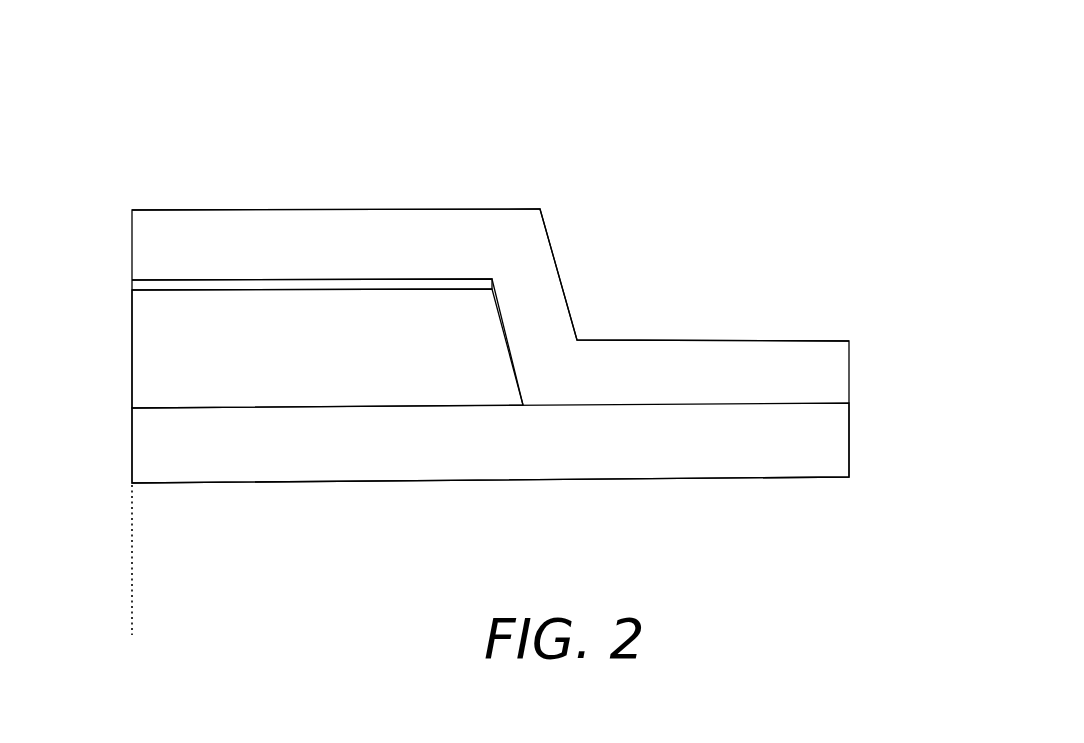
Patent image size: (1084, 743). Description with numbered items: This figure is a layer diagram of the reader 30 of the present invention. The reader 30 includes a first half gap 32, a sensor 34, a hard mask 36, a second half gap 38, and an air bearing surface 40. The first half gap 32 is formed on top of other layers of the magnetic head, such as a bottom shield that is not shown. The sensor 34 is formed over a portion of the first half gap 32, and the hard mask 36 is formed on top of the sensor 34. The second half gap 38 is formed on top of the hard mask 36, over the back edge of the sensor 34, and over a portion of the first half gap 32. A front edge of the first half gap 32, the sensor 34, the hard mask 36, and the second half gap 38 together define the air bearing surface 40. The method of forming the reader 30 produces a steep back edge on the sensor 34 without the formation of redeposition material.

The reader 30 is at (643, 142).
The first half gap 32 is at (506, 462).
The sensor 34 is at (334, 358).
The hard mask 36 is at (132, 284).
The second half gap 38 is at (448, 252).
The air bearing surface 40 is at (132, 607).